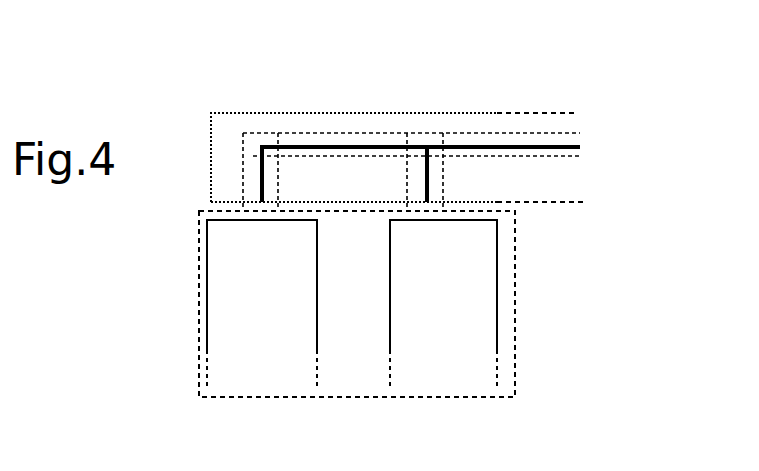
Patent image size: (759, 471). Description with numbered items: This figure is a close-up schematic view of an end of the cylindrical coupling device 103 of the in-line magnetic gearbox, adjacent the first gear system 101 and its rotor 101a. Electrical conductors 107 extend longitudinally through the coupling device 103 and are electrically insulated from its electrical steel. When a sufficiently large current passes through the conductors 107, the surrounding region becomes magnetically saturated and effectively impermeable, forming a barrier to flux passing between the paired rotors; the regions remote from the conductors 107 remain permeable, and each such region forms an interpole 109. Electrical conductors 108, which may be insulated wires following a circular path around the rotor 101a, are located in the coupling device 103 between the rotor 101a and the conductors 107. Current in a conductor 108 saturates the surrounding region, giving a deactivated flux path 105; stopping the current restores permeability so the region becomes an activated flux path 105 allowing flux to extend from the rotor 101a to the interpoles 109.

The first gear system 101 is at (516, 283).
The rotor 101a is at (237, 333).
The coupling device 103 is at (496, 113).
The flux path 105 is at (256, 133).
The electrical conductors 107 is at (369, 147).
The electrical conductors 108 is at (429, 171).
The interpole 109 is at (582, 149).